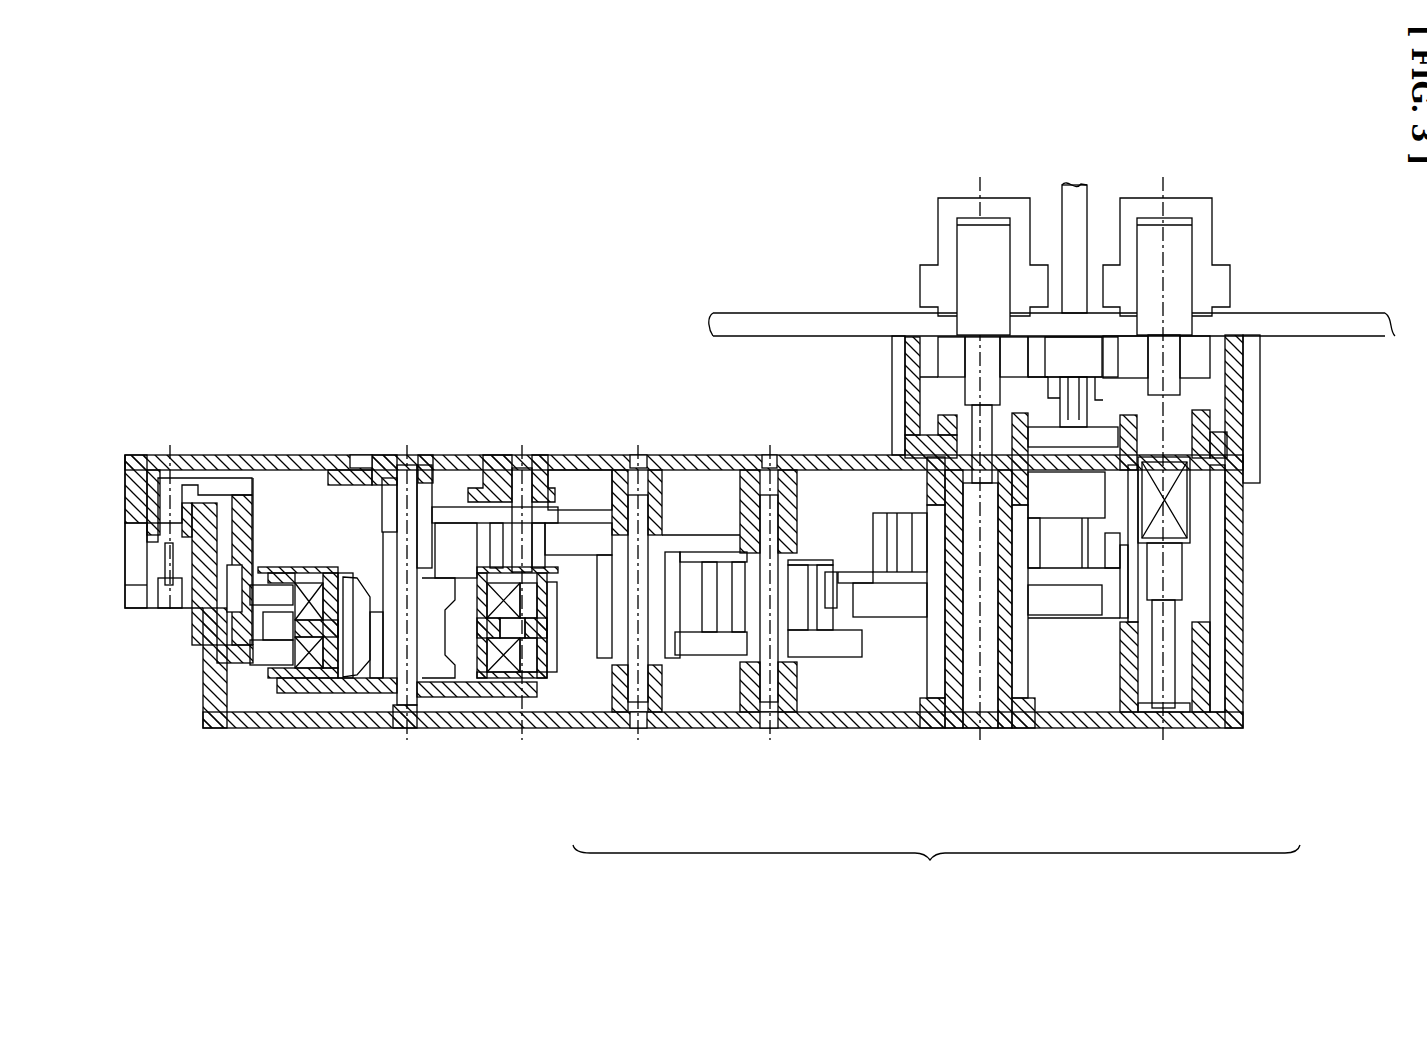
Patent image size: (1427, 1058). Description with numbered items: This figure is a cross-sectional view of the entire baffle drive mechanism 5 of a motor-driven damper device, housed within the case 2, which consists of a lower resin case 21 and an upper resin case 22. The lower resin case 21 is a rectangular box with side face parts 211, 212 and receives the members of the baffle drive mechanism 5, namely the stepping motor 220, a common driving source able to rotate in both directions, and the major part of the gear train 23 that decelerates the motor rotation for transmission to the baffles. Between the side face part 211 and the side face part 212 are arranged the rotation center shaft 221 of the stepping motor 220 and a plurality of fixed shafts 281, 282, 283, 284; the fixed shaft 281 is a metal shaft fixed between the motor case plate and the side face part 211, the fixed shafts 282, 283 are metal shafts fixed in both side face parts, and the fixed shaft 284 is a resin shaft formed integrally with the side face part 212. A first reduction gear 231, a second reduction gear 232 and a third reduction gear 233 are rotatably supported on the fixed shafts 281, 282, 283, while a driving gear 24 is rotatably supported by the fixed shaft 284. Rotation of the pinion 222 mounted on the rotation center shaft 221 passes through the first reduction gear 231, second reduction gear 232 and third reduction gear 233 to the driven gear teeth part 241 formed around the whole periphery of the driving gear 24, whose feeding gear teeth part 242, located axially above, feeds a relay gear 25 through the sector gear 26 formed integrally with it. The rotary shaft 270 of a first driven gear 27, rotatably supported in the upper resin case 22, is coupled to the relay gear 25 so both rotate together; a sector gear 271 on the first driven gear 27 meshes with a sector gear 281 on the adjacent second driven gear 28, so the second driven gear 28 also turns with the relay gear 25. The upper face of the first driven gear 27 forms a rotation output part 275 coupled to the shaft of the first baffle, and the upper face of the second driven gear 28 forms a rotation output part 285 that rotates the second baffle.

The baffle drive mechanism 5 is at (763, 510).
The case 2 is at (763, 546).
The lower resin case 21 is at (756, 586).
The side face part 211 is at (197, 453).
The side face part 212 is at (873, 728).
The upper resin case 22 is at (1277, 323).
The gear train 23 is at (936, 873).
The driving gear 24 is at (905, 532).
The driven gear teeth part 241 is at (845, 578).
The feeding gear teeth part 242 is at (1050, 553).
The relay gear 25 is at (1187, 560).
The sector gear 26 is at (1095, 545).
The first driven gear 27 is at (1182, 447).
The rotary shaft 270 is at (1240, 462).
The sector gear 271 is at (1097, 405).
The rotation output part 275 is at (1173, 288).
The second driven gear 28 is at (952, 365).
The fixed shaft 281 is at (525, 572).
The fixed shaft 282 is at (647, 697).
The fixed shaft 283 is at (777, 702).
The fixed shaft 284 is at (1003, 673).
The rotation output part 285 is at (995, 293).
The stepping motor 220 is at (353, 632).
The rotation center shaft 221 is at (402, 675).
The pinion 222 is at (420, 508).
The first reduction gear 231 is at (455, 515).
The second reduction gear 232 is at (560, 543).
The third reduction gear 233 is at (795, 555).